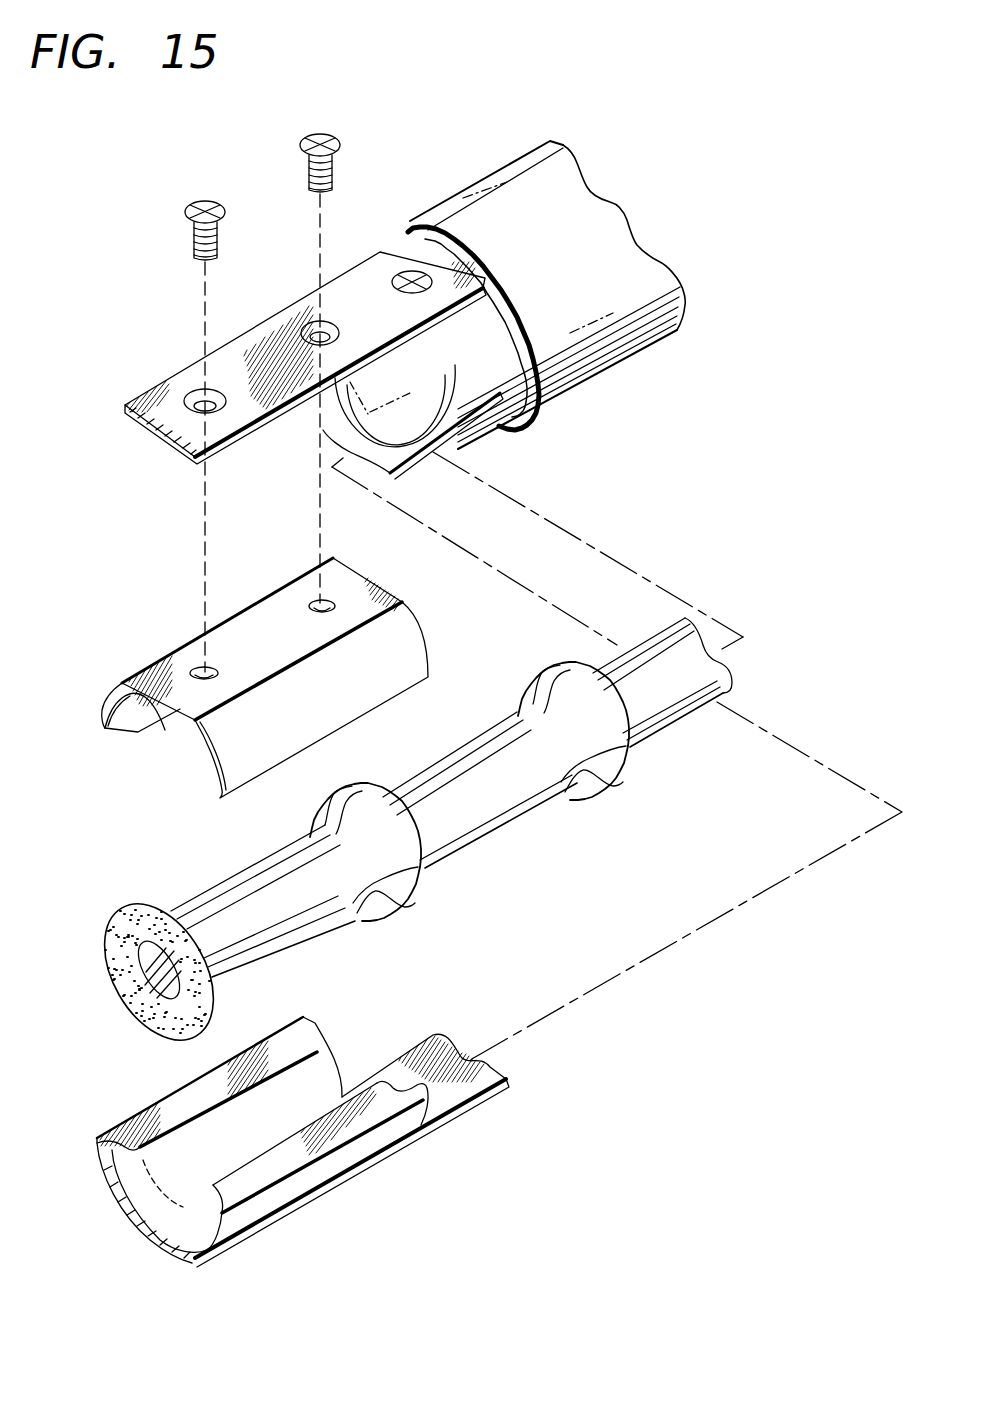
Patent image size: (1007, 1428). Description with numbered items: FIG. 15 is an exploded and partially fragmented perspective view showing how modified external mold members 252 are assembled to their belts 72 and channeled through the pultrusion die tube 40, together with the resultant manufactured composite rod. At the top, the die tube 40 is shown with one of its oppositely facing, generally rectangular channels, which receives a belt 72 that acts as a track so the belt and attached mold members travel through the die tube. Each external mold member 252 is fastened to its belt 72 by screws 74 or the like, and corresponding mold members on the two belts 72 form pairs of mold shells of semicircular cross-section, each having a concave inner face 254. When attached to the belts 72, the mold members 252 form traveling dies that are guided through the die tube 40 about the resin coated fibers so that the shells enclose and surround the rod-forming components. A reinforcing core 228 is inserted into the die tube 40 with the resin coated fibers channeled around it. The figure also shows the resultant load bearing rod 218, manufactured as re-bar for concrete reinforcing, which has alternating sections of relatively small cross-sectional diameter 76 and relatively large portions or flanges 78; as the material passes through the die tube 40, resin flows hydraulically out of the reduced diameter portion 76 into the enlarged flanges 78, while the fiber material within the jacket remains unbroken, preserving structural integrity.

The screws 74 is at (228, 210).
The belt 72 is at (130, 402).
The pultrusion die tube 40 is at (603, 370).
The external mold members 252 is at (110, 683).
The concave inner face 254 is at (148, 713).
The load bearing rod 218 is at (388, 838).
The relatively small cross-sectional diameter section 76 is at (503, 821).
The flanges 78 is at (623, 788).
The reinforcing core 228 is at (113, 1002).